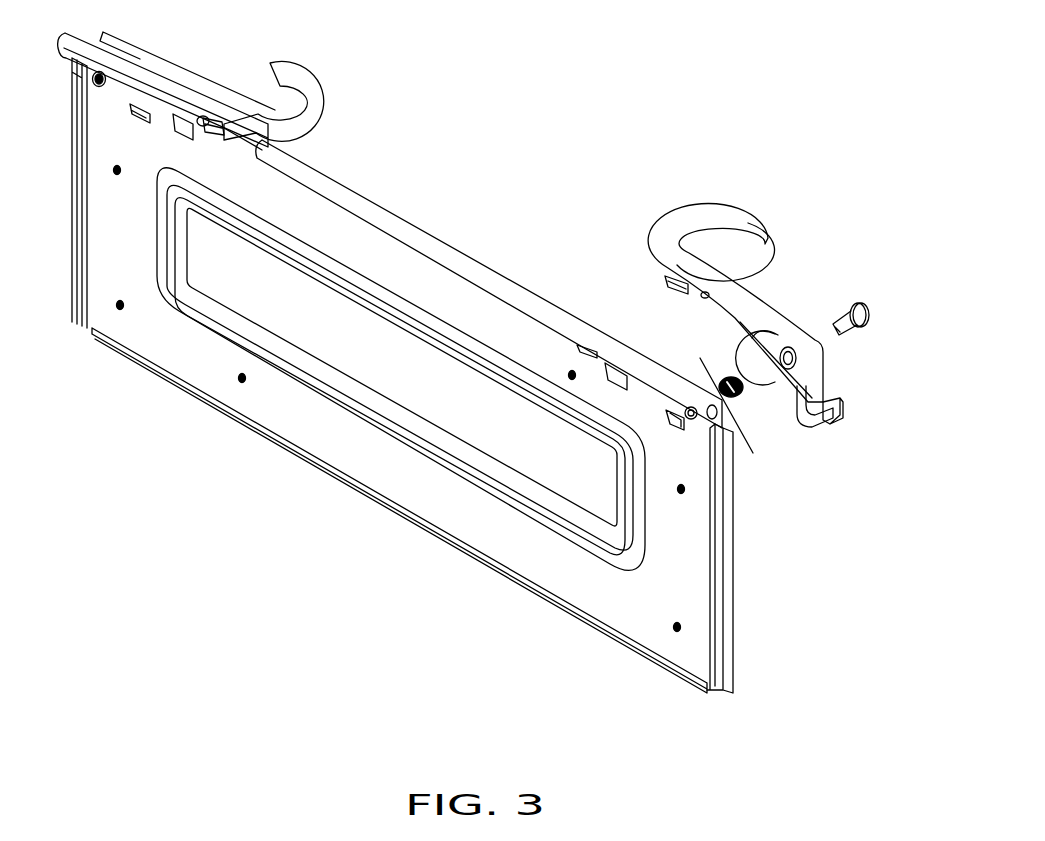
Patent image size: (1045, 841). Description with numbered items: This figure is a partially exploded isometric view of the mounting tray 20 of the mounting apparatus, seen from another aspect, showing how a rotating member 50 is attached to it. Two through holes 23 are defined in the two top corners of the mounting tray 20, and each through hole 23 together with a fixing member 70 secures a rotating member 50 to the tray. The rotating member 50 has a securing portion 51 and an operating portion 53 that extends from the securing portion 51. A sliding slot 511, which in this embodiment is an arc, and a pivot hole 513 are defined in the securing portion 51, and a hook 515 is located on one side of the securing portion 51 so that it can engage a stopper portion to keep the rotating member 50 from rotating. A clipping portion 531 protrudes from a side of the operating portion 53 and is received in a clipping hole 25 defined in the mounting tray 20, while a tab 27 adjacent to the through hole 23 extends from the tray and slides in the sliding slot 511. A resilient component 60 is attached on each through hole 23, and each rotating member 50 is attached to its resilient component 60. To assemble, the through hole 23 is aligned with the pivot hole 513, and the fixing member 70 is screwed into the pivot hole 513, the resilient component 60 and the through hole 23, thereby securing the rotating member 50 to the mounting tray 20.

The mounting tray 20 is at (345, 442).
The through hole 23 is at (684, 422).
The clipping hole 25 is at (585, 346).
The tab 27 is at (684, 430).
The rotating member 50 is at (681, 212).
The securing portion 51 is at (775, 335).
The operating portion 53 is at (312, 86).
The resilient component 60 is at (727, 377).
The fixing member 70 is at (850, 304).
The sliding slot 511 is at (800, 404).
The pivot hole 513 is at (798, 357).
The hook 515 is at (843, 412).
The clipping portion 531 is at (216, 118).